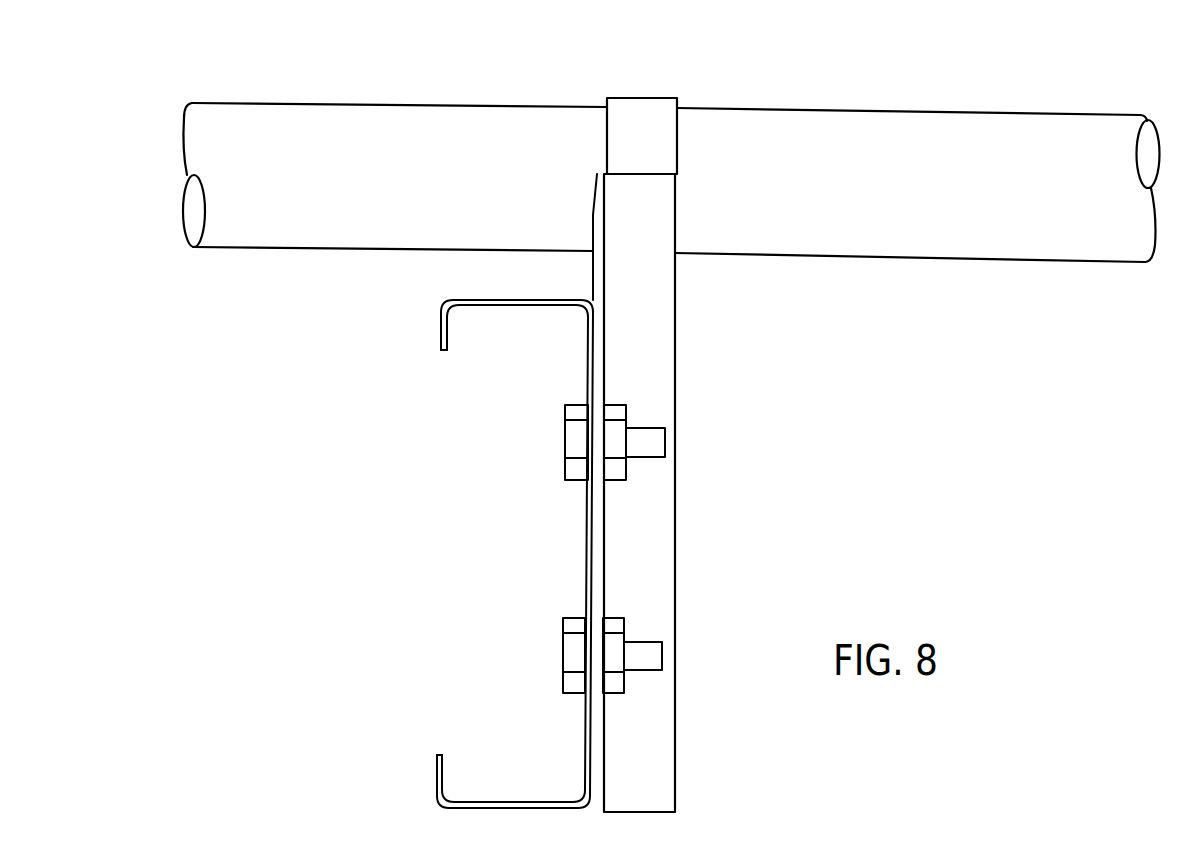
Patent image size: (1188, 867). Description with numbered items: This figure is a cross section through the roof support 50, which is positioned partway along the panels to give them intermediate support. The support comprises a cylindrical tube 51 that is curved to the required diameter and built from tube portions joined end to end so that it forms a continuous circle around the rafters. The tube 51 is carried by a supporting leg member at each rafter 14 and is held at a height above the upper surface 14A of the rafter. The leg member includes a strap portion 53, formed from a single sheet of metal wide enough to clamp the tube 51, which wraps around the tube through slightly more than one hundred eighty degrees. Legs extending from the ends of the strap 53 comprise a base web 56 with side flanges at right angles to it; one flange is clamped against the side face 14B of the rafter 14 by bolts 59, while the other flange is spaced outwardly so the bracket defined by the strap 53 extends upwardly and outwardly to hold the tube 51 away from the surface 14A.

The rafter 14 is at (438, 363).
The upper surface of the rafter 14A is at (465, 300).
The side face of the rafter 14B is at (590, 355).
The roof support 50 is at (750, 99).
The cylindrical tube 51 is at (840, 113).
The strap portion 53 is at (650, 120).
The base web 56 is at (647, 498).
The bolts 59 is at (563, 632).